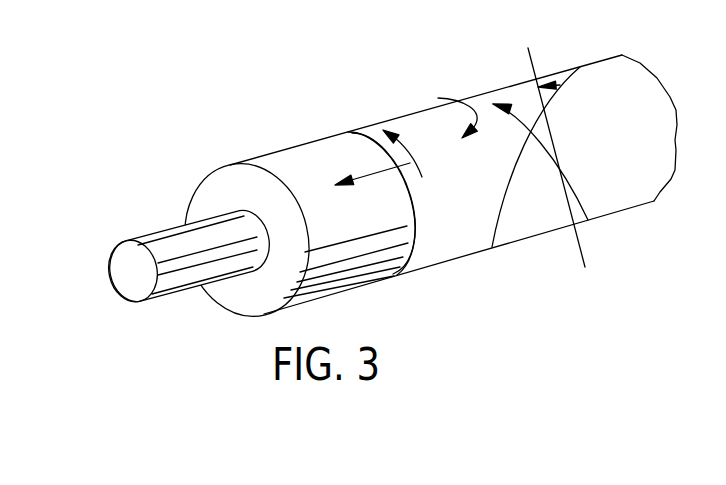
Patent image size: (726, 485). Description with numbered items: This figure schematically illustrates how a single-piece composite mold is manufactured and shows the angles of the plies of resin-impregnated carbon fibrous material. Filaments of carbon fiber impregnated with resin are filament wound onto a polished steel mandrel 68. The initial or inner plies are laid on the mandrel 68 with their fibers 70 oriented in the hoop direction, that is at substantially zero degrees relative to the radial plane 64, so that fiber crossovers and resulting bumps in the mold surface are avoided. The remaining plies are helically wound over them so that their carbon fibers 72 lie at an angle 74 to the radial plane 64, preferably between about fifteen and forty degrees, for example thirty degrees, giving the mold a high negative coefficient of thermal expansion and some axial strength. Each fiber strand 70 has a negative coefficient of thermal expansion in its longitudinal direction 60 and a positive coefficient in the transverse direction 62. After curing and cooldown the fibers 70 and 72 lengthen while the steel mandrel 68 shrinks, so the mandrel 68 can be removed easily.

The longitudinal direction of the fiber 60 is at (413, 158).
The transverse direction of the fiber 62 is at (365, 175).
The radial plane 64 is at (587, 250).
The polished steel mandrel 68 is at (210, 193).
The hoop direction fibers 70 is at (418, 250).
The helically wound carbon fibers 72 is at (552, 168).
The fiber orientation angle 74 is at (554, 78).